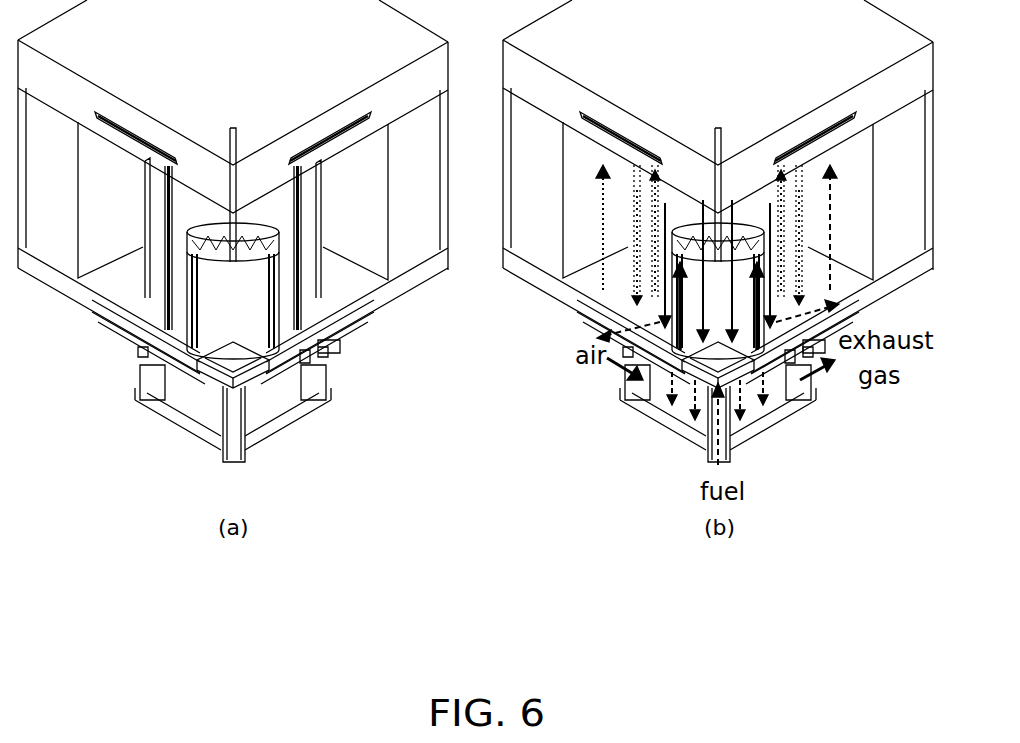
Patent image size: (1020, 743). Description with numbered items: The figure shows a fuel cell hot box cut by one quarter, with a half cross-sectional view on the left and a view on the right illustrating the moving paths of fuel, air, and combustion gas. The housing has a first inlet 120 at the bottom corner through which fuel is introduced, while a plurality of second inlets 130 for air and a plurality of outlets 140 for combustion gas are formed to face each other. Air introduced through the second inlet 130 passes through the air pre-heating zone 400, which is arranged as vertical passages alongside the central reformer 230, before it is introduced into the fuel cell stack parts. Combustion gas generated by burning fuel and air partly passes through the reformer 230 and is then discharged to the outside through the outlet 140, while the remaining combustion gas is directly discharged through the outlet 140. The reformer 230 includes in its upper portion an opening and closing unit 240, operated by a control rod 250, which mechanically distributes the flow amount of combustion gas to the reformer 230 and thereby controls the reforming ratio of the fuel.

The first inlet 120 is at (240, 457).
The second inlet 130 is at (140, 372).
The outlet 140 is at (322, 358).
The reformer 230 is at (200, 350).
The opening and closing unit 240 is at (172, 162).
The control rod 250 is at (240, 133).
The air pre-heating zone 400 is at (185, 312).